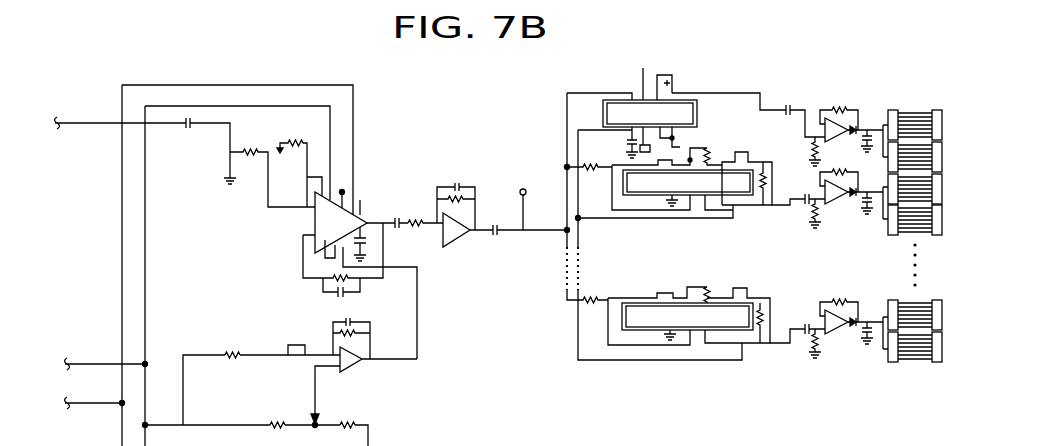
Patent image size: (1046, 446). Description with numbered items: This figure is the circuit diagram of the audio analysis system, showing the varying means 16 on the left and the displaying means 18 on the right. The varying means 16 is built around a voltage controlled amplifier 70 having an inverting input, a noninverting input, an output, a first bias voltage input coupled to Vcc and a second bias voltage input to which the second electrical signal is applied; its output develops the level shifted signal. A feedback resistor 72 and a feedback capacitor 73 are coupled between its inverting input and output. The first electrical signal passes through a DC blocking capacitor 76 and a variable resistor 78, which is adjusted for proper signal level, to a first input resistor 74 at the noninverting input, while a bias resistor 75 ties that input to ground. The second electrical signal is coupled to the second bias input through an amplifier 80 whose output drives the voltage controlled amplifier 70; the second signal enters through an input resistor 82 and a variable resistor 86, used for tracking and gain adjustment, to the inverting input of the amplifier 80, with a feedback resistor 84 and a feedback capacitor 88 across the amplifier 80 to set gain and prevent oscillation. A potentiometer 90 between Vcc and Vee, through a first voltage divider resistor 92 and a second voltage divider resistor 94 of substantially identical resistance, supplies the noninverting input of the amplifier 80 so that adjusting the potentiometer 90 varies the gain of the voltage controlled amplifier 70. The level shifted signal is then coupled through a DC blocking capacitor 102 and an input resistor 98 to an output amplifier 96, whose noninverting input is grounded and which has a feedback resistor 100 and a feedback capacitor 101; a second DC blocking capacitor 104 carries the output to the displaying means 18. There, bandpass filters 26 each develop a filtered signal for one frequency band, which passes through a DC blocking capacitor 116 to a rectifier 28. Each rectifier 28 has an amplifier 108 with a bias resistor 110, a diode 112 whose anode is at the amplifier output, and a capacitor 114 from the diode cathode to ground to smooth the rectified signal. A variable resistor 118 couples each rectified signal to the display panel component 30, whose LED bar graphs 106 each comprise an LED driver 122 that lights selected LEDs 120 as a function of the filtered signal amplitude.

The varying means 16 is at (405, 170).
The displaying means 18 is at (634, 367).
The bandpass filter 26 is at (722, 303).
The rectifier 28 is at (820, 134).
The display panel component 30 is at (932, 142).
The voltage controlled amplifier 70 is at (315, 221).
The feedback resistor 72 is at (335, 268).
The feedback capacitor 73 is at (352, 297).
The first input resistor 74 is at (250, 151).
The bias resistor 75 is at (294, 143).
The DC blocking capacitor 76 is at (189, 129).
The variable resistor 78 is at (230, 160).
The amplifier 80 is at (350, 367).
The input resistor 82 is at (236, 352).
The feedback resistor 84 is at (357, 333).
The variable resistor 86 is at (292, 354).
The feedback capacitor 88 is at (346, 321).
The potentiometer 90 is at (318, 424).
The first voltage divider resistor 92 is at (270, 424).
The second voltage divider resistor 94 is at (355, 422).
The output amplifier 96 is at (457, 240).
The input resistor 98 is at (400, 212).
The feedback resistor 100 is at (456, 201).
The feedback capacitor 101 is at (455, 183).
The input resistor 102 is at (410, 226).
The second DC blocking capacitor 104 is at (498, 232).
The LED bar graph 106 is at (922, 297).
The amplifier 108 is at (854, 134).
The bias resistor 110 is at (838, 108).
The diode 112 is at (856, 125).
The capacitor 114 is at (869, 135).
The DC blocking capacitor 116 is at (786, 104).
The variable resistor 118 is at (877, 190).
The LED 120 is at (937, 112).
The LED driver 122 is at (896, 108).